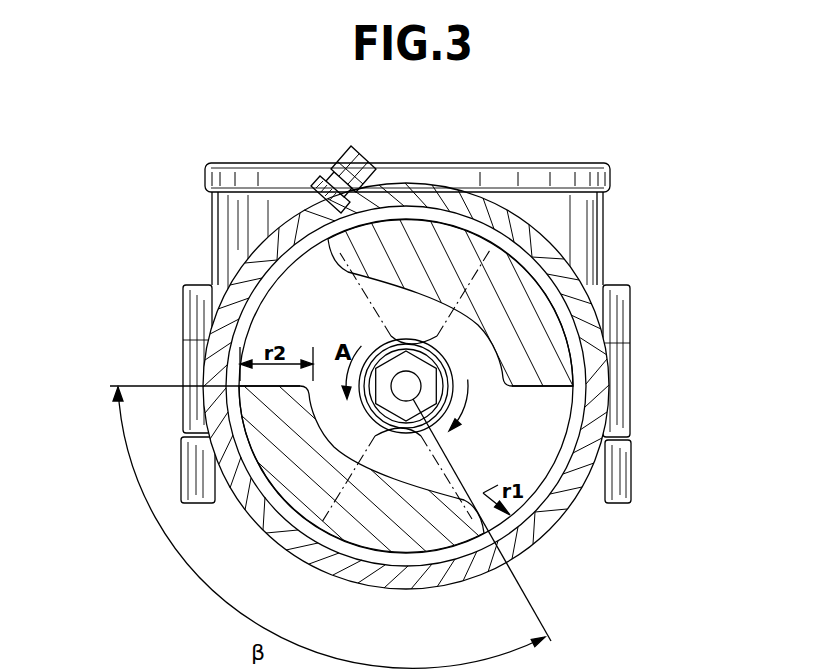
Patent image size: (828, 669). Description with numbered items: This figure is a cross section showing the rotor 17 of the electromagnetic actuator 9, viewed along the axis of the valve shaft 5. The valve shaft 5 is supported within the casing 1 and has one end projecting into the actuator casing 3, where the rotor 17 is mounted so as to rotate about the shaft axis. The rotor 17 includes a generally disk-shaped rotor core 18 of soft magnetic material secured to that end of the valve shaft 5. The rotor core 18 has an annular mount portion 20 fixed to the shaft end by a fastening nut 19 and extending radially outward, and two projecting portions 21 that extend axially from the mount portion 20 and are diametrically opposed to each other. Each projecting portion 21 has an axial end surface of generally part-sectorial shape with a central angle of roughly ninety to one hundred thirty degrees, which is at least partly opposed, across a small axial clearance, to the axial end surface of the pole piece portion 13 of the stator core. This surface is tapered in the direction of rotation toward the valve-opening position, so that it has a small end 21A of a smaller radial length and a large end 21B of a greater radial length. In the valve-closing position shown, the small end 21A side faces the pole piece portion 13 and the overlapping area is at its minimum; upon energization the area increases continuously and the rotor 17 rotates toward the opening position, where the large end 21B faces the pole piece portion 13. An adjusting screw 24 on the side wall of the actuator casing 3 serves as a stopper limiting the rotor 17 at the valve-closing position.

The casing 1 is at (594, 163).
The actuator casing 3 is at (570, 277).
The valve shaft 5 is at (402, 393).
The electromagnetic actuator 9 is at (252, 283).
The pole piece portion 13 is at (498, 257).
The rotor 17 is at (538, 497).
The rotor core 18 is at (445, 386).
The fastening nut 19 is at (412, 402).
The mount portion 20 is at (557, 418).
The projecting portion 21 is at (520, 272).
The small end 21A is at (338, 262).
The large end 21B is at (232, 384).
The adjusting screw 24 is at (364, 148).